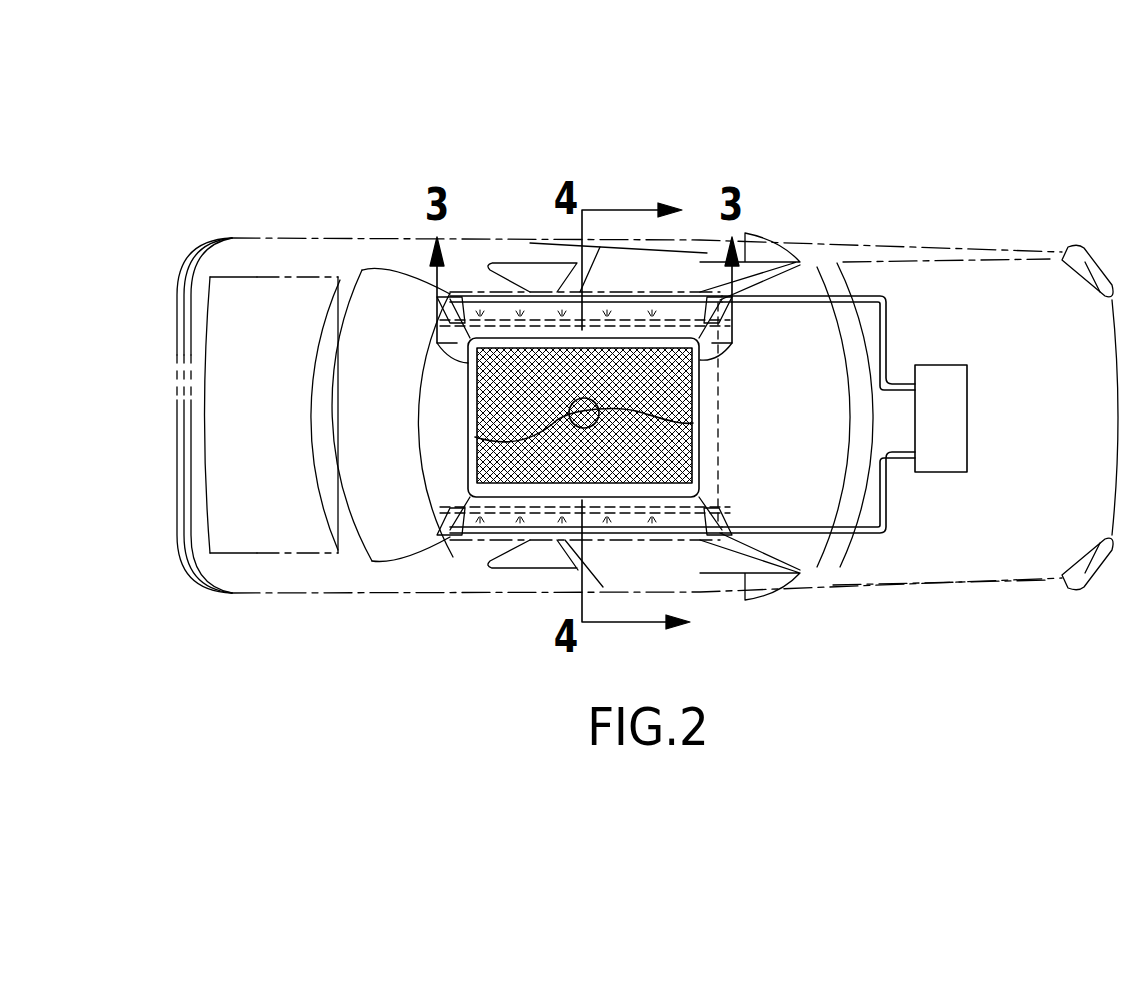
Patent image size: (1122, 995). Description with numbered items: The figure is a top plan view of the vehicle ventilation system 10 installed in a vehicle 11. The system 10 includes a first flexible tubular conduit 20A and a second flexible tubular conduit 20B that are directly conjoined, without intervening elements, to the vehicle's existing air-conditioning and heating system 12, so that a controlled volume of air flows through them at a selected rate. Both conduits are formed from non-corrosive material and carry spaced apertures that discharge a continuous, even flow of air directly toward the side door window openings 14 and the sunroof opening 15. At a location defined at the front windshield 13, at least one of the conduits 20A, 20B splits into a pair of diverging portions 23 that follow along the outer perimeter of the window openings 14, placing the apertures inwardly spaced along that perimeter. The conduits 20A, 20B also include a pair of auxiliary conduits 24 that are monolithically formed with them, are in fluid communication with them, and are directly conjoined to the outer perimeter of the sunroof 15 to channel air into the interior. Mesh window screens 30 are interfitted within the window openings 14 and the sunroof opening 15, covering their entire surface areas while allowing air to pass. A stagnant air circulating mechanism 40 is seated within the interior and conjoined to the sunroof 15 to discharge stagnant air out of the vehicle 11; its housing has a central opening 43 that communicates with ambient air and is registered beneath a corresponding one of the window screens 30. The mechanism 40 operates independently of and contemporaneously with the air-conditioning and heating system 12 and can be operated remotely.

The system 10 is at (522, 281).
The vehicle 11 is at (647, 382).
The air-conditioning and heating system 12 is at (979, 418).
The front windshield 13 is at (789, 604).
The side door window openings 14 is at (643, 411).
The sunroof opening 15 is at (650, 415).
The first flexible tubular conduit 20A is at (818, 288).
The second flexible tubular conduit 20B is at (818, 551).
The diverging portions 23 is at (573, 416).
The auxiliary conduits 24 is at (541, 414).
The window screens 30 is at (468, 557).
The stagnant air circulating mechanism 40 is at (531, 440).
The central opening 43 is at (671, 421).